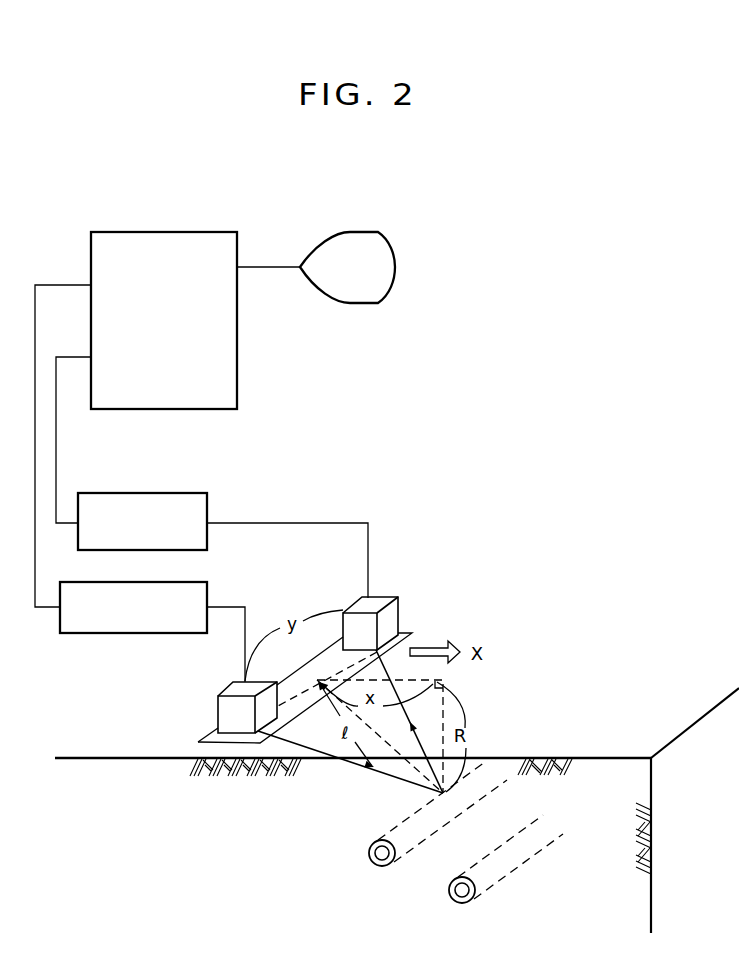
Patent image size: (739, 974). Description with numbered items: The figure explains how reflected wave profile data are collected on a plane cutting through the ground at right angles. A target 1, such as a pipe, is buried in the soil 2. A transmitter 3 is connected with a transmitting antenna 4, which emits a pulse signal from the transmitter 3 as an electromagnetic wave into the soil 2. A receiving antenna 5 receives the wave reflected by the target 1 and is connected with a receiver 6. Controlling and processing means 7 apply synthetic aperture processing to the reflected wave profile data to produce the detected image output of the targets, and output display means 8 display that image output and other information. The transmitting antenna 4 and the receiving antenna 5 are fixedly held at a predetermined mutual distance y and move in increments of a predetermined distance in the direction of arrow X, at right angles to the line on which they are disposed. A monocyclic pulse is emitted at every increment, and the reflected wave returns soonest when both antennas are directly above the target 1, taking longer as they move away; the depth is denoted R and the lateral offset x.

The target 1 is at (369, 856).
The soil 2 is at (594, 757).
The transmitter 3 is at (105, 634).
The transmitting antenna 4 is at (218, 708).
The receiving antenna 5 is at (402, 610).
The receiver 6 is at (183, 493).
The controlling and processing means 7 is at (198, 232).
The output display means 8 is at (376, 232).